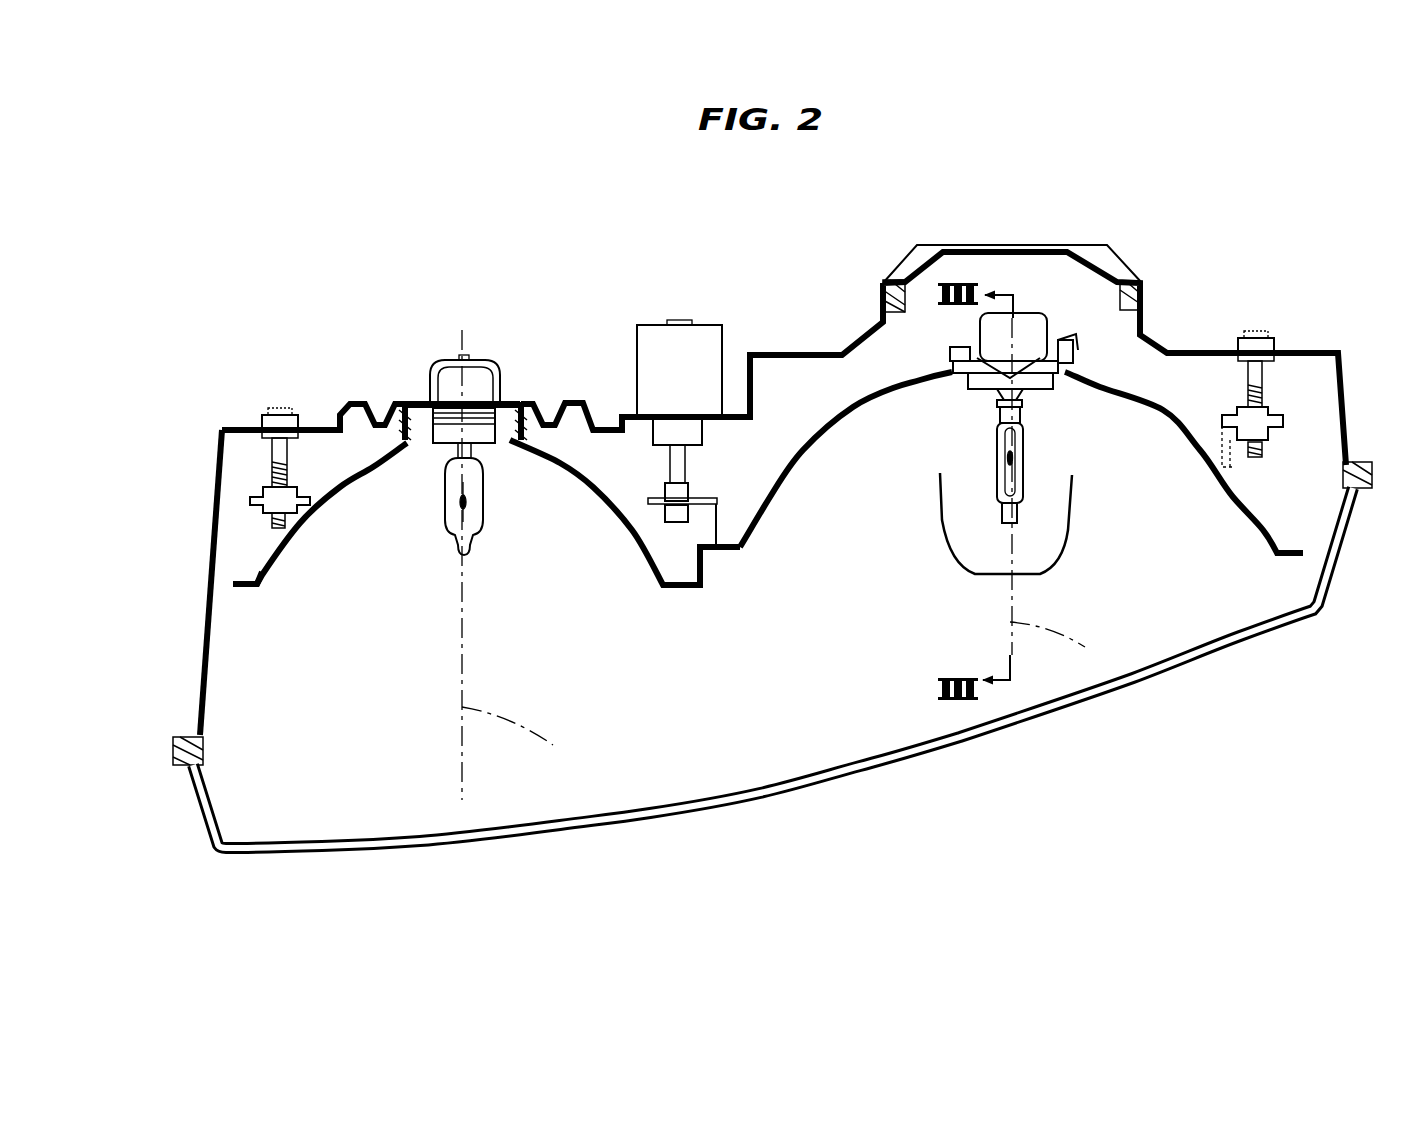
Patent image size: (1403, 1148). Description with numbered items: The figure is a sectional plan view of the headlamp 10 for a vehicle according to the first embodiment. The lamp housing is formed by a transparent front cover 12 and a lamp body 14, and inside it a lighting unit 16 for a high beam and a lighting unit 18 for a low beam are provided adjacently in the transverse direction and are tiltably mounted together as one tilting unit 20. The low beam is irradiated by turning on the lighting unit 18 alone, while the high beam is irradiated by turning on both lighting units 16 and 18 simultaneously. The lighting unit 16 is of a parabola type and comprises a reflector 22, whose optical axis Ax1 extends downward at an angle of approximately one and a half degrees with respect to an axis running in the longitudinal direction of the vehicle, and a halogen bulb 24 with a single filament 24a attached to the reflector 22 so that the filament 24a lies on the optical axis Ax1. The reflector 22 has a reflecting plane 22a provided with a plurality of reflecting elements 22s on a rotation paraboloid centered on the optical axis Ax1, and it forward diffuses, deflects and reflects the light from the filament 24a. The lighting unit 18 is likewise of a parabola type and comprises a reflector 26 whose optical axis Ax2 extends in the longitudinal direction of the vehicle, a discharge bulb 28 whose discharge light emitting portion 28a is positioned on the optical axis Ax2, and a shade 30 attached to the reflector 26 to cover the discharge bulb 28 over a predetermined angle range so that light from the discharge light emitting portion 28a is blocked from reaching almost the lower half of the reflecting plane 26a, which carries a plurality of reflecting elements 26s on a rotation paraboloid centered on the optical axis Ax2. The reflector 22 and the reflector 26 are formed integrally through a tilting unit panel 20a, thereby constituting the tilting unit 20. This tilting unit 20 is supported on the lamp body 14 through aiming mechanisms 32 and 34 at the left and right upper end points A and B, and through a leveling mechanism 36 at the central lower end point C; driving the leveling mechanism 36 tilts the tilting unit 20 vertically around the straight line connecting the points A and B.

The headlamp for a vehicle 10 is at (398, 222).
The transparent front cover 12 is at (833, 785).
The lamp body 14 is at (805, 345).
The lighting unit for a high beam 16 is at (397, 660).
The lighting unit for a low beam 18 is at (912, 630).
The tilting unit 20 is at (735, 630).
The tilting unit panel 20a is at (687, 592).
The reflector 22 is at (486, 522).
The reflecting plane 22a is at (305, 525).
The reflecting elements 22s is at (342, 490).
The halogen bulb 24 is at (492, 565).
The filament 24a is at (468, 500).
The reflector 26 is at (1033, 482).
The reflecting plane 26a is at (797, 473).
The reflecting elements 26s is at (823, 453).
The discharge bulb 28 is at (1047, 484).
The discharge light emitting portion 28a is at (1017, 458).
The shade 30 is at (1072, 540).
The aiming mechanism 32 is at (258, 466).
The aiming mechanism 34 is at (1272, 392).
The leveling mechanism 36 is at (645, 305).
The left upper end point A is at (297, 478).
The right upper end point B is at (1240, 408).
The central lower end point C is at (676, 505).
The optical axis Ax1 is at (529, 736).
The optical axis Ax2 is at (1069, 644).